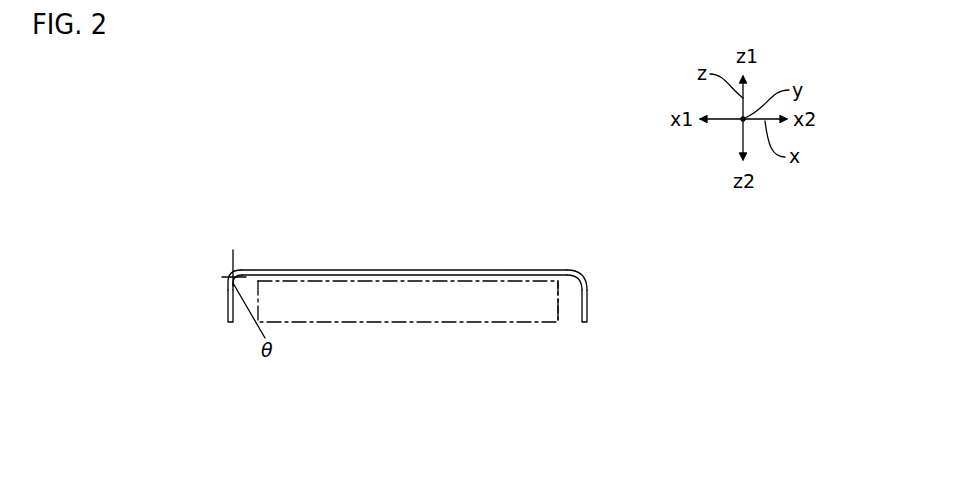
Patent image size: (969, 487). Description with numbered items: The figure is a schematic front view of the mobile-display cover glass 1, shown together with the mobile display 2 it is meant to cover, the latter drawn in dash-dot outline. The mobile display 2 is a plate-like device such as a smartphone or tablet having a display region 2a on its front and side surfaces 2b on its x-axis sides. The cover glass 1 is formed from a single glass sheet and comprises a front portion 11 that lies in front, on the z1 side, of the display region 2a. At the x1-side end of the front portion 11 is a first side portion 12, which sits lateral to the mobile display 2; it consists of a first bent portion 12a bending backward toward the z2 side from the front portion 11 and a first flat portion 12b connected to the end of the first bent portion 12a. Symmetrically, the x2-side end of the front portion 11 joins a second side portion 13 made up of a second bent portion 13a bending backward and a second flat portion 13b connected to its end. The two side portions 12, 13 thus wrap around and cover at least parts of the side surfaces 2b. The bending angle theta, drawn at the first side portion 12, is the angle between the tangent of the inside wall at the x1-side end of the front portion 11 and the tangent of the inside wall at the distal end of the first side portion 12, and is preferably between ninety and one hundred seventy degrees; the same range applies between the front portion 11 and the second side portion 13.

The mobile-display cover glass 1 is at (414, 297).
The front portion 11 is at (372, 271).
The first side portion 12 is at (193, 319).
The first bent portion 12a is at (228, 280).
The first flat portion 12b is at (226, 306).
The second side portion 13 is at (638, 314).
The second bent portion 13a is at (589, 280).
The second flat portion 13b is at (588, 300).
The mobile display 2 is at (465, 299).
The display region 2a is at (290, 279).
The side surfaces 2b is at (588, 292).